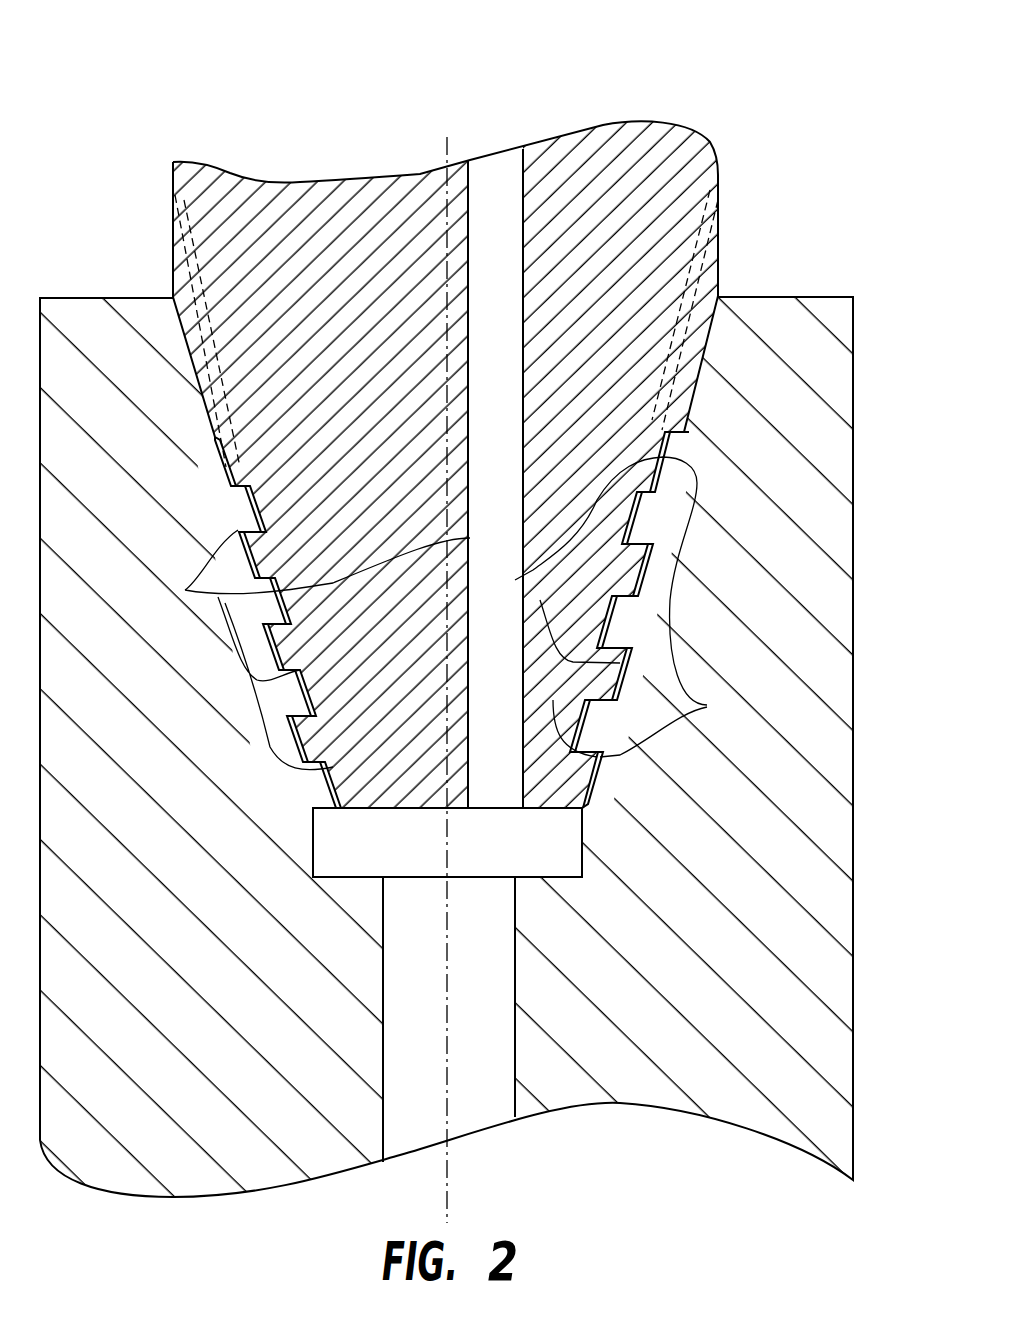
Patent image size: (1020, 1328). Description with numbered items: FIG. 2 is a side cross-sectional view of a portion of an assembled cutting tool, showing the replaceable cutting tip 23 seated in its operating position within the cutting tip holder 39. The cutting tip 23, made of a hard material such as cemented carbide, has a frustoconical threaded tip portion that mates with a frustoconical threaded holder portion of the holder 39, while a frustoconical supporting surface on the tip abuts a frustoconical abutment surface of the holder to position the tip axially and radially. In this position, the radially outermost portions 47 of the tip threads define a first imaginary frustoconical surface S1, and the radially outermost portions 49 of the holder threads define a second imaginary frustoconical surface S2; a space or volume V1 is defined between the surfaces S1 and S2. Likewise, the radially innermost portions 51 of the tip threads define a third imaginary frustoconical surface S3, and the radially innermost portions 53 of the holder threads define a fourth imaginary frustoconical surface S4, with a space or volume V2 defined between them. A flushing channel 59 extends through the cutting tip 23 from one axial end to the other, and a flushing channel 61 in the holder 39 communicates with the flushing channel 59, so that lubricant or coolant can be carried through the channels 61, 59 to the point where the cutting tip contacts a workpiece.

The replaceable cutting tip 23 is at (302, 170).
The cutting tip holder 39 is at (860, 384).
The radially outermost portions of the frustoconical threaded tip portion 47 is at (640, 547).
The radially outermost portions of the frustoconical threaded holder portion 49 is at (669, 447).
The radially innermost portions of the frustoconical threaded tip portion 51 is at (247, 483).
The radially innermost portions of the frustoconical threaded holder portion 53 is at (340, 798).
The flushing channel 59 is at (509, 298).
The flushing channel 61 is at (420, 1123).
The first imaginary frustoconical surface S1 is at (726, 233).
The second imaginary frustoconical surface S2 is at (110, 27).
The third imaginary frustoconical surface S3 is at (722, 163).
The fourth imaginary frustoconical surface S4 is at (725, 195).
The space or volume V1 is at (707, 705).
The space or volume V2 is at (185, 590).